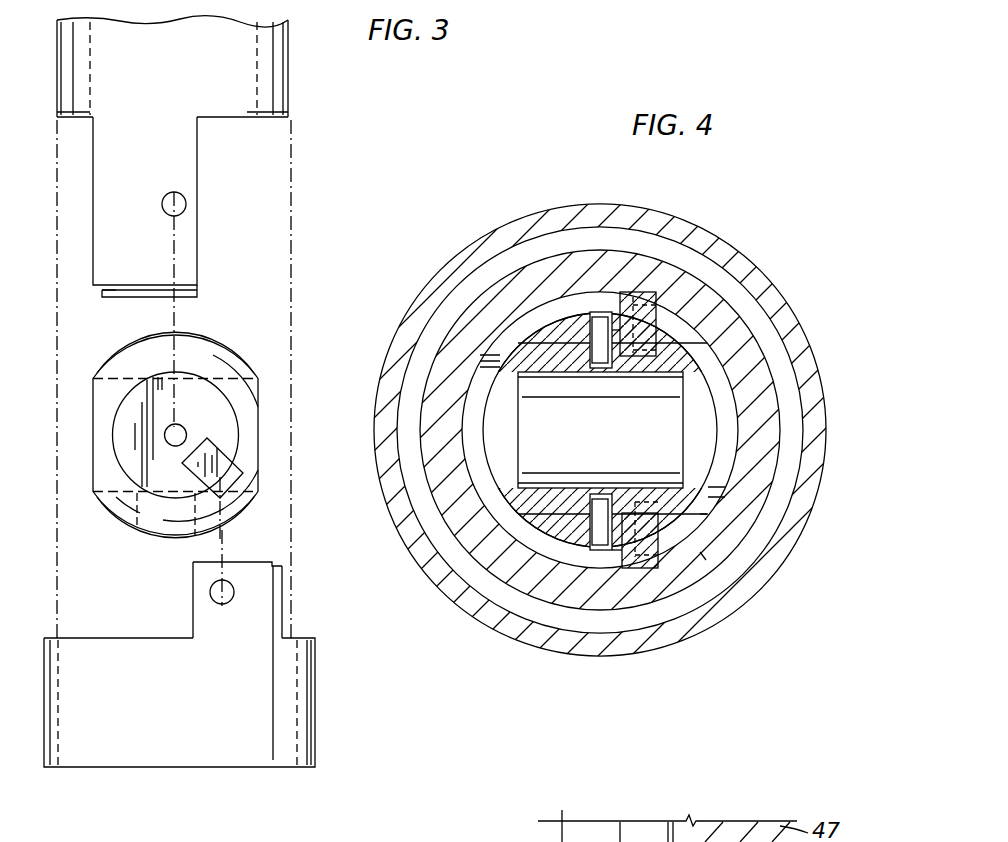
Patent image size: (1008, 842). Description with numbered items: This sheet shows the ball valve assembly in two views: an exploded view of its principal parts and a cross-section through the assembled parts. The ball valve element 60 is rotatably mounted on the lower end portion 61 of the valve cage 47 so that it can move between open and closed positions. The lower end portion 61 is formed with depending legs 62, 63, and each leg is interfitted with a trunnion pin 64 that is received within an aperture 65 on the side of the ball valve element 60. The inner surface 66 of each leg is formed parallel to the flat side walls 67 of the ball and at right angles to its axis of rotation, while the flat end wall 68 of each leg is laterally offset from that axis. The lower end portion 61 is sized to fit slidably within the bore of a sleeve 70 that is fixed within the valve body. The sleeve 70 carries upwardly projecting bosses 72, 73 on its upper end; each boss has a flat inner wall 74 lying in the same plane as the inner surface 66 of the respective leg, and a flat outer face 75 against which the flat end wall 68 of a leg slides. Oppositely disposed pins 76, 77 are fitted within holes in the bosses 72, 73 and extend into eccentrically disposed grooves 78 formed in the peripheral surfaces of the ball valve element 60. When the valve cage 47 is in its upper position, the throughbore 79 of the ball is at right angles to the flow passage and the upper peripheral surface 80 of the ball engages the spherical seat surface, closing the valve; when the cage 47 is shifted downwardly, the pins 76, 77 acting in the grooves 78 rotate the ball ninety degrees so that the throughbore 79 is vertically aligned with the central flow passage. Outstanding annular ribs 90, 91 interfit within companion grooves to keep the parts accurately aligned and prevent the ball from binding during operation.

In FIG. 3, the valve cage 47 is at (288, 58).
In FIG. 3, the lower end portion 61 is at (288, 97).
In FIG. 3, the flat end wall 68 is at (197, 165).
In FIG. 4, the flat end wall 68 is at (620, 332).
In FIG. 3, the depending leg 62 is at (190, 263).
In FIG. 4, the depending leg 62 is at (567, 530).
In FIG. 3, the annular rib 90 is at (113, 291).
In FIG. 3, the upper peripheral surface 80 is at (209, 338).
In FIG. 3, the ball valve element 60 is at (245, 359).
In FIG. 3, the throughbore 79 is at (113, 379).
In FIG. 4, the throughbore 79 is at (640, 483).
In FIG. 3, the aperture 65 is at (188, 430).
In FIG. 4, the aperture 65 is at (580, 493).
In FIG. 3, the flat side wall 67 is at (128, 464).
In FIG. 4, the flat side wall 67 is at (548, 343).
In FIG. 3, the eccentrically disposed groove 78 is at (225, 472).
In FIG. 3, the annular rib 91 is at (262, 562).
In FIG. 3, the flat outer face 75 is at (193, 590).
In FIG. 4, the flat outer face 75 is at (615, 568).
In FIG. 3, the upwardly projecting boss 72 is at (273, 600).
In FIG. 4, the upwardly projecting boss 72 is at (703, 560).
In FIG. 3, the sleeve 70 is at (315, 690).
In FIG. 4, the depending leg 63 is at (568, 323).
In FIG. 4, the trunnion pin 64 is at (598, 327).
In FIG. 4, the pin 77 is at (642, 272).
In FIG. 4, the upwardly projecting boss 73 is at (687, 327).
In FIG. 4, the inner surface 66 is at (447, 580).
In FIG. 4, the pin 76 is at (660, 562).
In FIG. 4, the flat inner wall 74 is at (708, 512).